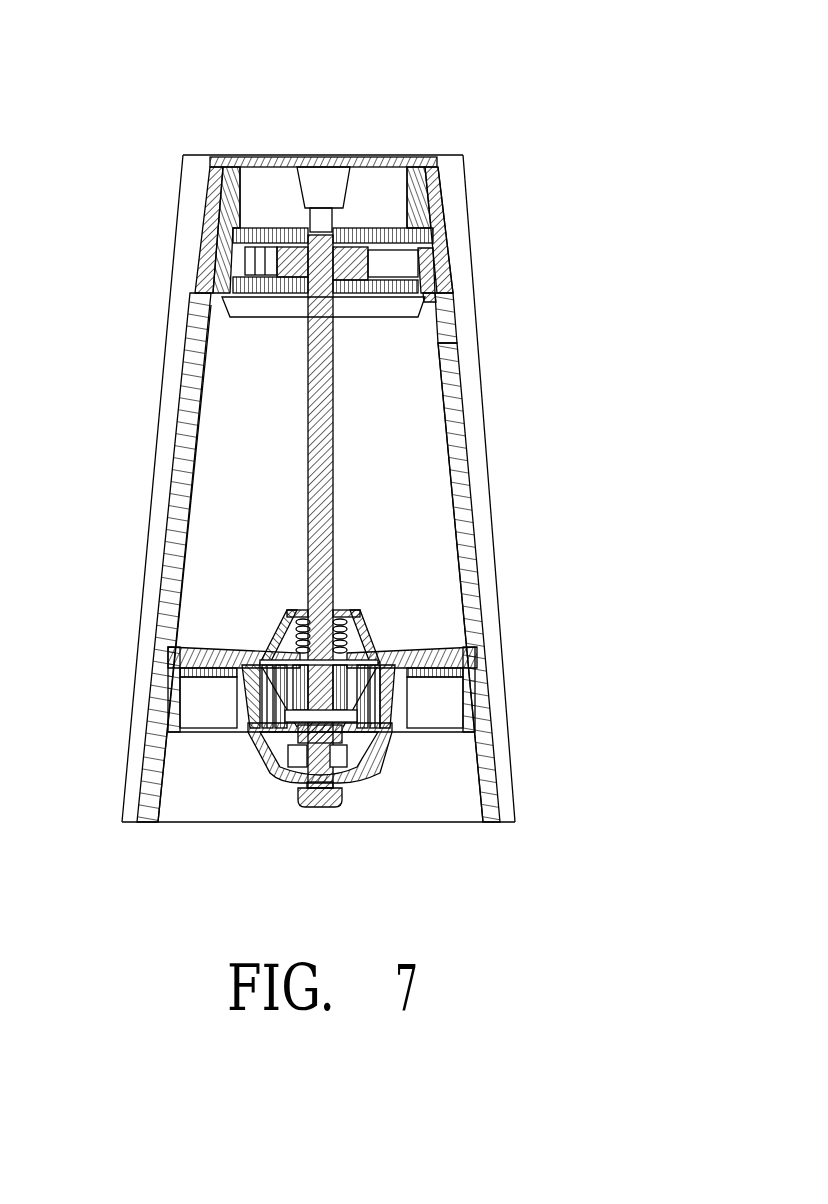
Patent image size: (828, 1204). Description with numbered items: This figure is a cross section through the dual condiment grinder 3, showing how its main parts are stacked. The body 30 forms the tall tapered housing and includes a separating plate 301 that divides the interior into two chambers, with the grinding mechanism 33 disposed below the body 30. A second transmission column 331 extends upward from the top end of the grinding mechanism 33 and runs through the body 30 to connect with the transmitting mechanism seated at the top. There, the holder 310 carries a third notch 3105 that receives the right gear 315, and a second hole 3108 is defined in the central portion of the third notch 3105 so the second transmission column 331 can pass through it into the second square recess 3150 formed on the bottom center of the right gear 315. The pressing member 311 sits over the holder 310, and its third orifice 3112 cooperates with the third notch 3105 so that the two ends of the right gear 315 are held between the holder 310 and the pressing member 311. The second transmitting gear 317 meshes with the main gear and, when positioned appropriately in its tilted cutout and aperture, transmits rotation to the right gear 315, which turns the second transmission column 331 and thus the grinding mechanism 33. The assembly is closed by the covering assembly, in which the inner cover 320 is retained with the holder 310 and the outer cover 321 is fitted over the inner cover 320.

The dual condiment grinder 3 is at (455, 78).
The body 30 is at (465, 537).
The separating plate 301 is at (433, 612).
The holder 310 is at (436, 297).
The pressing member 311 is at (228, 192).
The third orifice 3112 is at (357, 235).
The second square recess 3150 is at (295, 248).
The right gear 315 is at (360, 267).
The second transmitting gear 317 is at (246, 267).
The third notch 3105 is at (305, 287).
The second hole 3108 is at (303, 297).
The inner cover 320 is at (437, 186).
The outer cover 321 is at (458, 225).
The second transmission column 331 is at (312, 518).
The grinding mechanism 33 is at (365, 795).